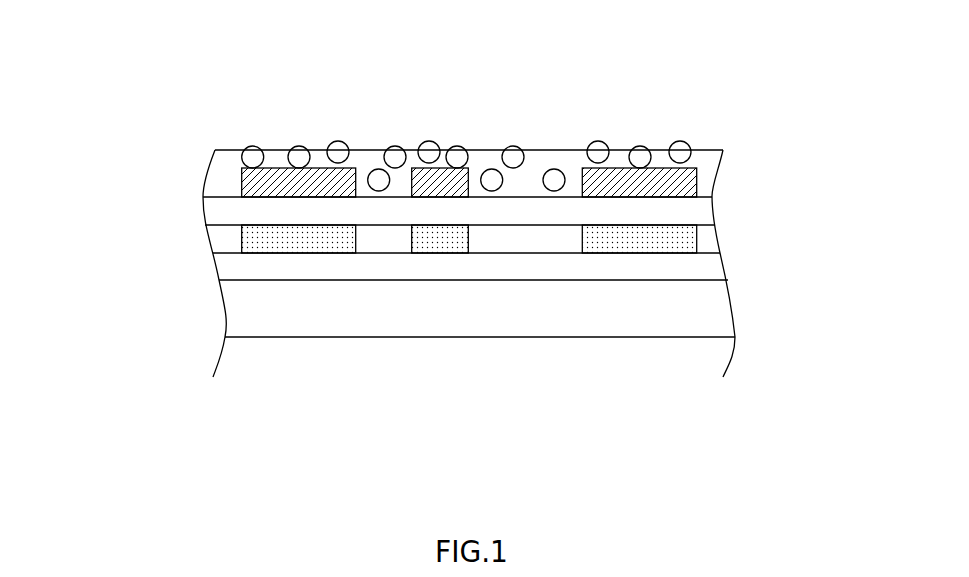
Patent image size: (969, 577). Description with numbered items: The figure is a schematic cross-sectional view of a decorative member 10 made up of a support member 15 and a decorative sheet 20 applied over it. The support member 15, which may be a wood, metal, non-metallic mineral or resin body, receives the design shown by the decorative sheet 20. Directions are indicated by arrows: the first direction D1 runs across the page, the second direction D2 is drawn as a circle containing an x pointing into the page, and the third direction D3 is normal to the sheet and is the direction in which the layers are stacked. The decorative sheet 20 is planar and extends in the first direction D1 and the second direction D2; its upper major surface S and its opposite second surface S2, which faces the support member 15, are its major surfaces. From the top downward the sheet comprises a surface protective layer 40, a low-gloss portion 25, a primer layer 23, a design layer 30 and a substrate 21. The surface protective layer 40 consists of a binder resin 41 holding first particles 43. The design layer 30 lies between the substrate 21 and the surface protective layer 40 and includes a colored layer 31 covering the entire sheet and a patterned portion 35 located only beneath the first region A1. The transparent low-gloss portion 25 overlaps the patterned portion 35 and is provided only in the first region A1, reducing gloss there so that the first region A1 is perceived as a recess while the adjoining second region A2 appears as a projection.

The decorative member 10 is at (731, 84).
The decorative sheet 20 is at (495, 222).
The support member 15 is at (705, 353).
The substrate 21 is at (705, 308).
The primer layer 23 is at (705, 210).
The low-gloss portion 25 is at (657, 180).
The design layer 30 is at (803, 228).
The colored layer 31 is at (705, 268).
The patterned portion 35 is at (697, 235).
The surface protective layer 40 is at (805, 117).
The binder resin 41 is at (707, 178).
The first particles 43 is at (686, 146).
The first surface S is at (228, 148).
The second surface S2 is at (252, 338).
The first region A1 is at (355, 150).
The second region A2 is at (582, 150).
The first direction D1 is at (103, 477).
The second direction D2 is at (98, 465).
The third direction D3 is at (86, 460).